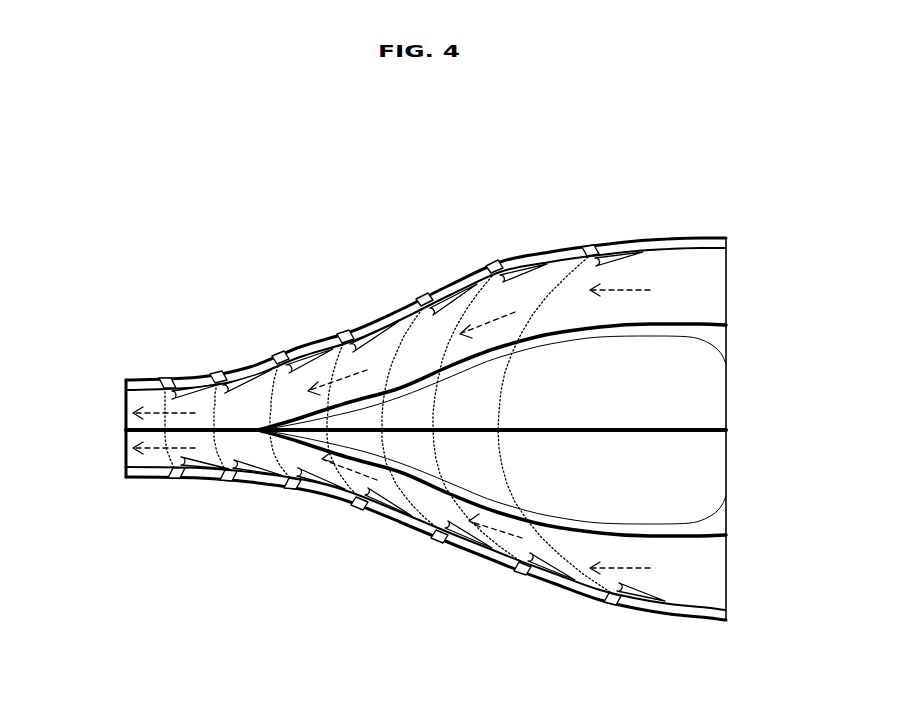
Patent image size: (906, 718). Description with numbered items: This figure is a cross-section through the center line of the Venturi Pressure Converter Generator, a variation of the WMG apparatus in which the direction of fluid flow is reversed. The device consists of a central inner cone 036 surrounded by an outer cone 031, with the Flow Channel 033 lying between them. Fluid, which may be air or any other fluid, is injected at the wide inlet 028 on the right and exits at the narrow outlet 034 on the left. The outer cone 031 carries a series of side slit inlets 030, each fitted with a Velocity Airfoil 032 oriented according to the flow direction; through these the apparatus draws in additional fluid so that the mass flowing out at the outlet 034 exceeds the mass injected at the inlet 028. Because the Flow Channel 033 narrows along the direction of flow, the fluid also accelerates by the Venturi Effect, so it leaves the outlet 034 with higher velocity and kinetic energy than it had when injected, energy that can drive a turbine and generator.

The inlet 028 is at (712, 286).
The side slit inlets 030 is at (416, 302).
The outer cone 031 is at (668, 240).
The Velocity Airfoils 032 is at (438, 300).
The Flow Channel 033 is at (429, 424).
The outlet 034 is at (118, 413).
The inner cone 036 is at (426, 430).